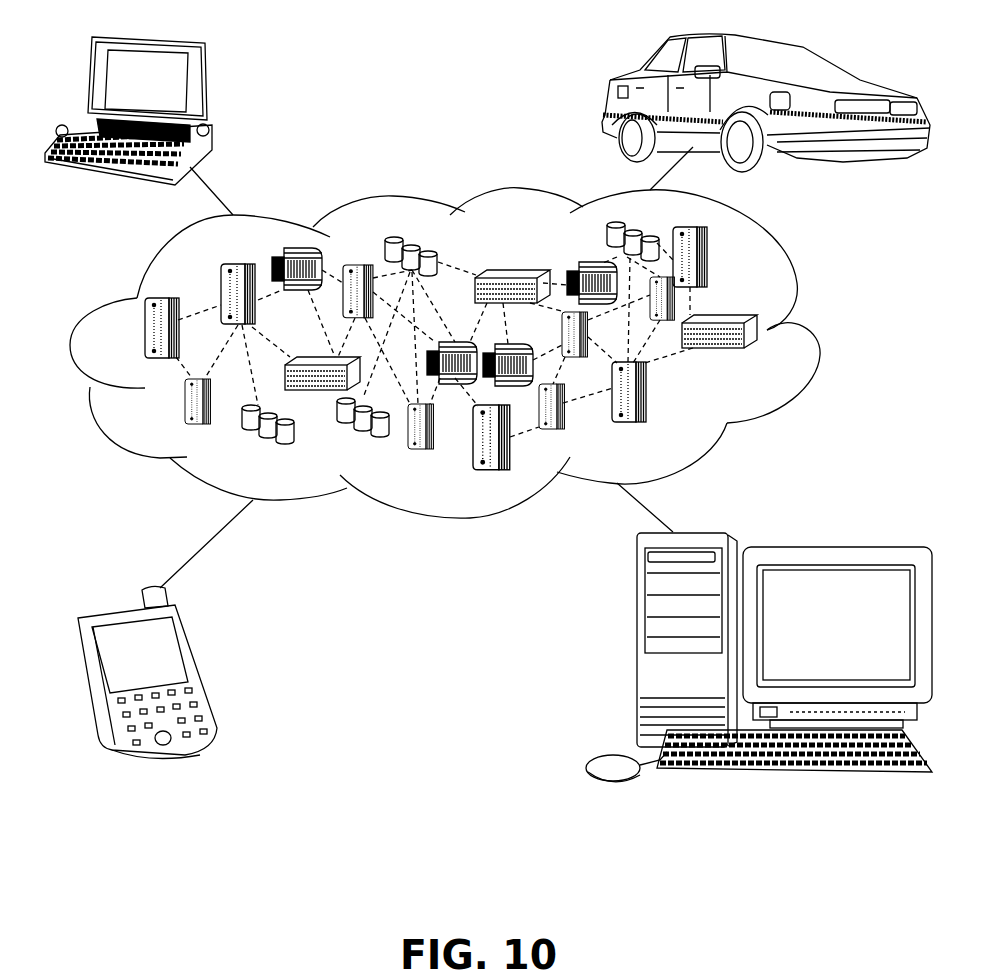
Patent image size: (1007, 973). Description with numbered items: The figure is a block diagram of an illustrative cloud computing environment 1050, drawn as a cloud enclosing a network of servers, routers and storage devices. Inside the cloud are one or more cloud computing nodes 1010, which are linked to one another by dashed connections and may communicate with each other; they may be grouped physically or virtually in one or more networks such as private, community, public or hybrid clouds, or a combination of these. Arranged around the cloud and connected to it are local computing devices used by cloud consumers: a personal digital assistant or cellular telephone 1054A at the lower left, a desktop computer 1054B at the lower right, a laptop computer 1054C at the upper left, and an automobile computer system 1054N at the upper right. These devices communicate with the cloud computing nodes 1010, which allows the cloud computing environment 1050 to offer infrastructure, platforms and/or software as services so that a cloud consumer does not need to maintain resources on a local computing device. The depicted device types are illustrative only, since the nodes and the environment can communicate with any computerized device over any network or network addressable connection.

The cloud computing nodes 1010 is at (790, 362).
The cloud computing environment 1050 is at (797, 293).
The personal digital assistant or cellular telephone 1054A is at (197, 664).
The desktop computer 1054B is at (637, 647).
The laptop computer 1054C is at (207, 88).
The automobile computer system 1054N is at (607, 94).